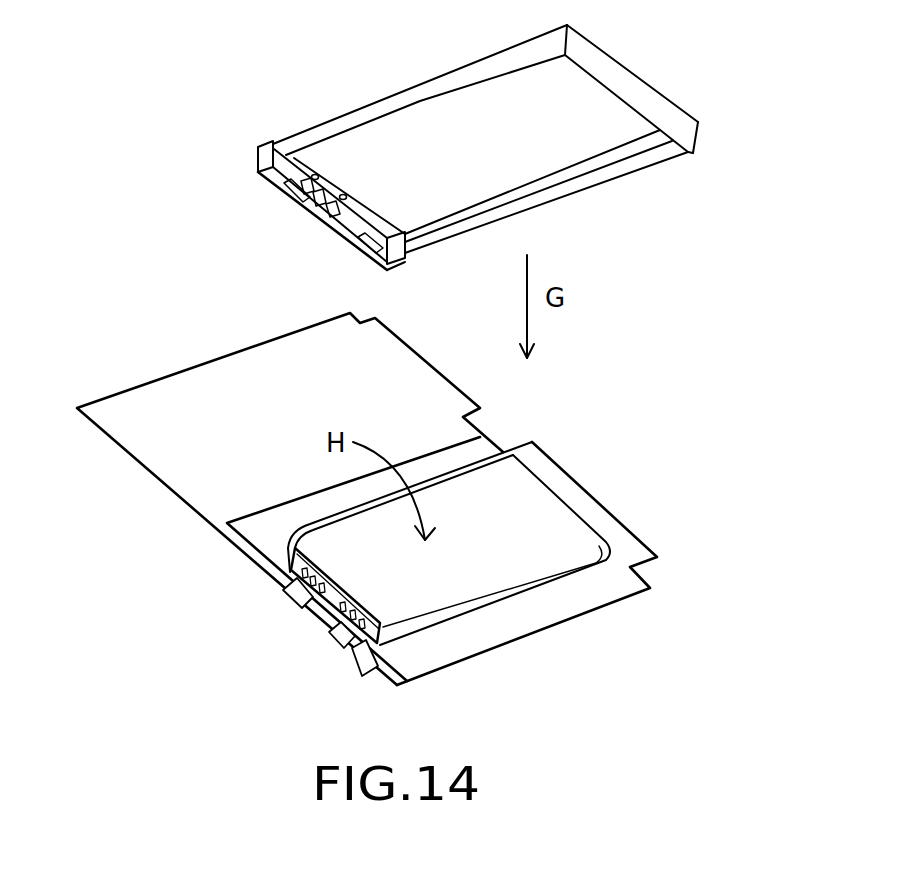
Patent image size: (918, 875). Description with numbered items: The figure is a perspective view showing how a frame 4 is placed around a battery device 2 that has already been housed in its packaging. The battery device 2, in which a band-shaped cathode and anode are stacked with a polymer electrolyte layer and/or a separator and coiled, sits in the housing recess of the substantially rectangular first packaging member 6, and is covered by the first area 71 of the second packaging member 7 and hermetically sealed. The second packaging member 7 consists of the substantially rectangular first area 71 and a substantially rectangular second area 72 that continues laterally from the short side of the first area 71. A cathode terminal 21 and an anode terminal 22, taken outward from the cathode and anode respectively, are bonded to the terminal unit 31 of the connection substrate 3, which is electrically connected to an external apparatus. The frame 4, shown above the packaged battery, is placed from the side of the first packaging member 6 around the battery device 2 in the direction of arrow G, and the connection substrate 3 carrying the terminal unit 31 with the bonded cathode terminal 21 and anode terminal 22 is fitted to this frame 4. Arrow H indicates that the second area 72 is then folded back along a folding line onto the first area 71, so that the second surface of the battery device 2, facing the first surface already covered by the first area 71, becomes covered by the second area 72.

The battery device 2 is at (417, 588).
The connection substrate 3 is at (360, 674).
The frame 4 is at (613, 75).
The first packaging member 6 is at (582, 503).
The second packaging member 7 is at (274, 491).
The cathode terminal 21 is at (337, 640).
The anode terminal 22 is at (290, 603).
The terminal unit 31 is at (312, 602).
The first area 71 is at (248, 553).
The second area 72 is at (158, 443).